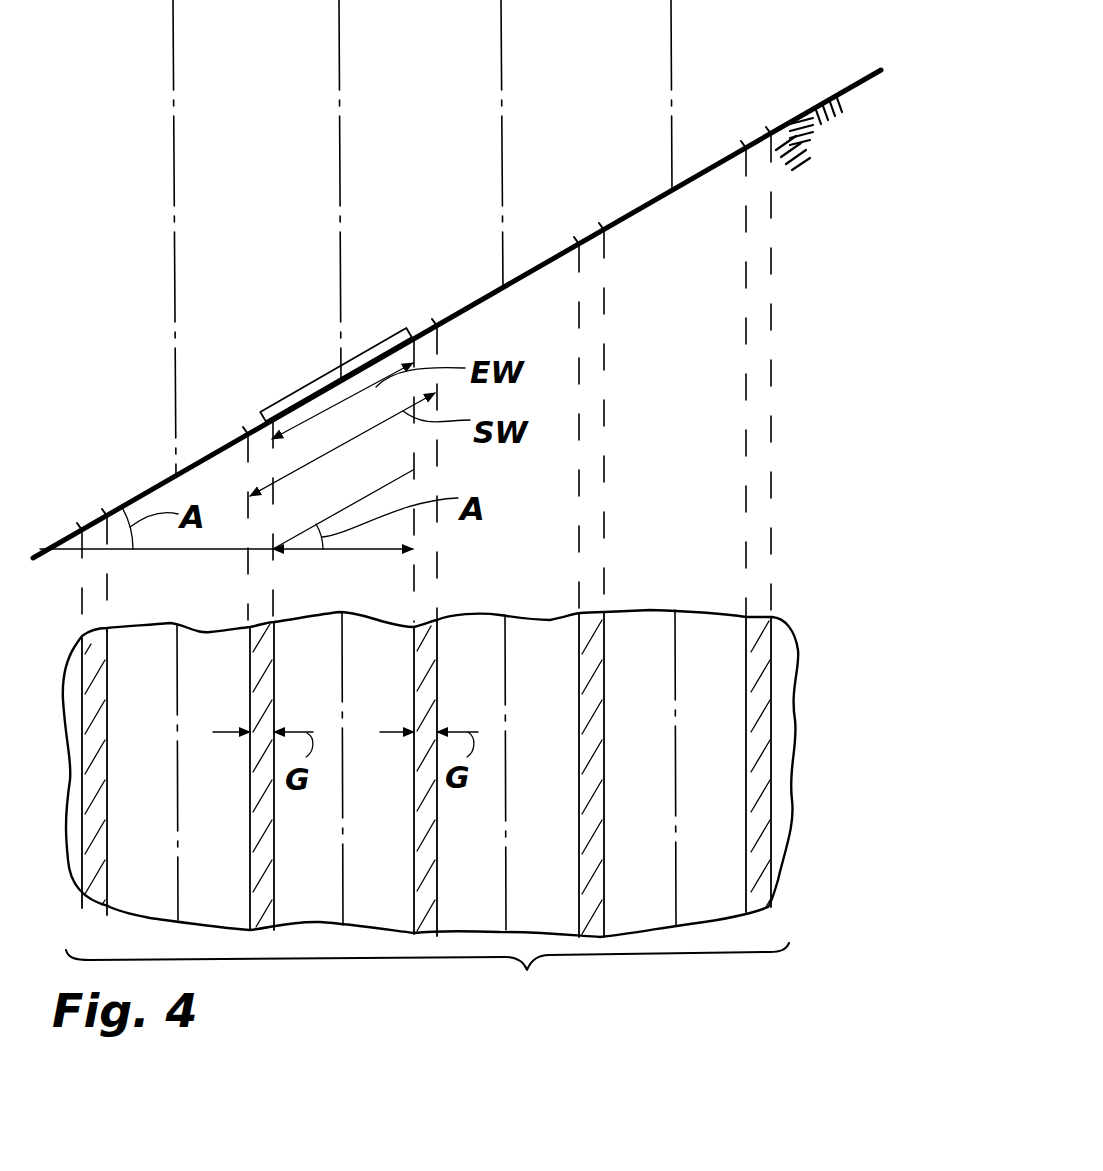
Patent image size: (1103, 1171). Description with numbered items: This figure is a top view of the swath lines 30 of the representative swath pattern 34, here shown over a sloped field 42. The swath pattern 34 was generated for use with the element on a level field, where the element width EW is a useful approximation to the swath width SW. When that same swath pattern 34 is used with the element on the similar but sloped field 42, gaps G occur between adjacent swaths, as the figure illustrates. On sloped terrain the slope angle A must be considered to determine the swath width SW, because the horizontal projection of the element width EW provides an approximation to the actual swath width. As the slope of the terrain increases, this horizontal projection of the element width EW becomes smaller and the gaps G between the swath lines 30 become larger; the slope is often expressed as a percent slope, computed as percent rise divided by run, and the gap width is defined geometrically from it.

The swath lines 30 is at (446, 600).
The sloped field 42 is at (787, 723).
The swath pattern 34 is at (427, 975).